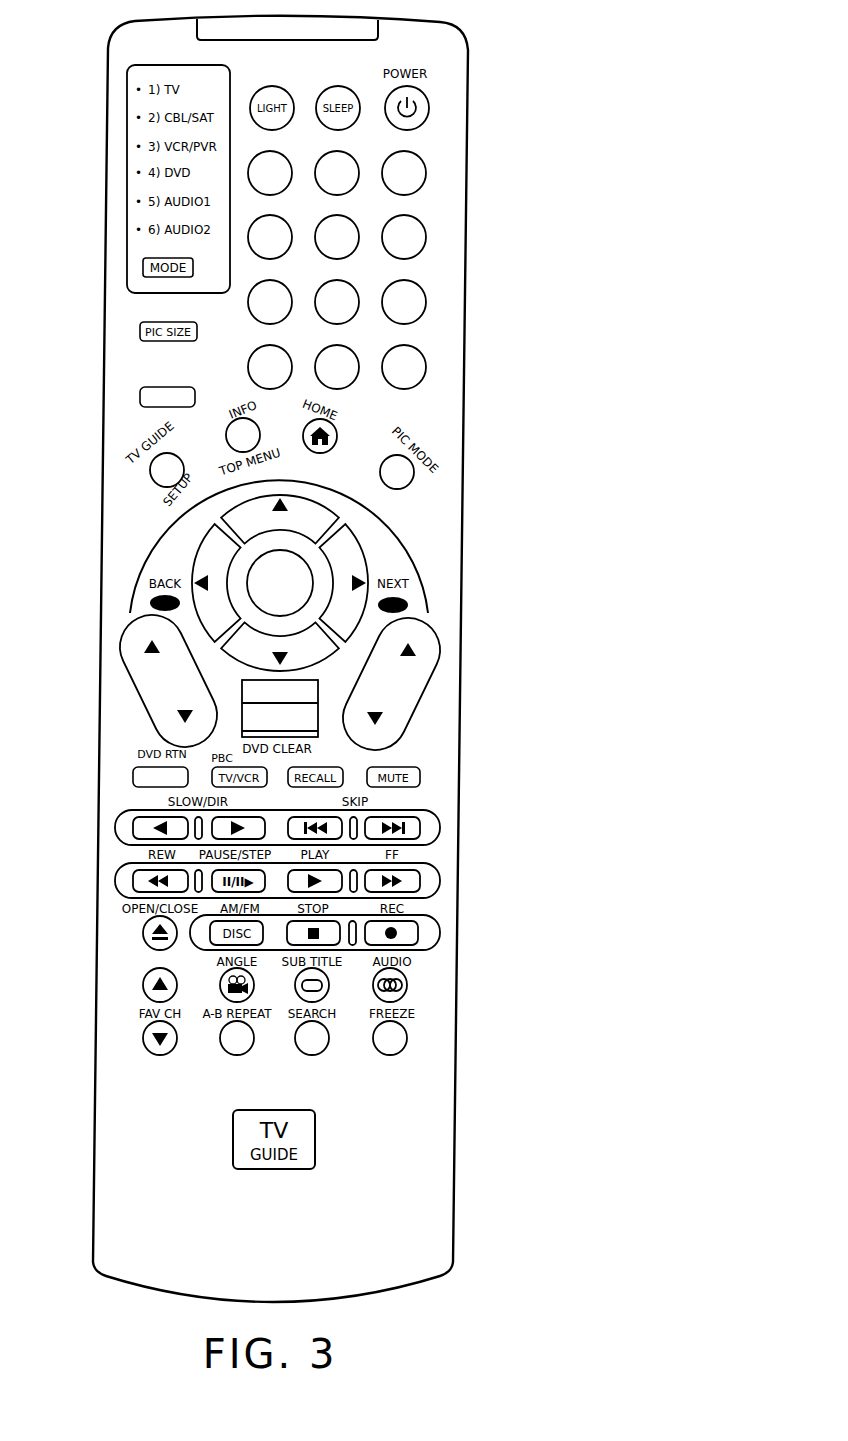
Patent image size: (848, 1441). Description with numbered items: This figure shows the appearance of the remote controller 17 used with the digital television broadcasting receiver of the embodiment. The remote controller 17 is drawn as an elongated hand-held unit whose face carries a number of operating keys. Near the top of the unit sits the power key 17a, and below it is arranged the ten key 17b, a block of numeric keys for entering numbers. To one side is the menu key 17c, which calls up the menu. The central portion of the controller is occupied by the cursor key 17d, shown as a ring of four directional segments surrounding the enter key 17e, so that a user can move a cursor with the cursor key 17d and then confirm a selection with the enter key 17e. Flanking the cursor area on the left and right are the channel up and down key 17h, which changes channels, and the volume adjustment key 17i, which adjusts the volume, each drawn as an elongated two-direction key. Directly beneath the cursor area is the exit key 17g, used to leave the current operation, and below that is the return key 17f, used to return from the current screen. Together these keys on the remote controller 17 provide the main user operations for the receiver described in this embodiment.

The remote controller 17 is at (468, 325).
The power key 17a is at (423, 108).
The ten key 17b is at (440, 217).
The menu key 17c is at (138, 393).
The cursor key 17d is at (320, 510).
The enter key 17e is at (293, 597).
The return key 17f is at (133, 777).
The exit key 17g is at (303, 718).
The channel up and down key 17h is at (133, 632).
The volume adjustment key 17i is at (410, 675).